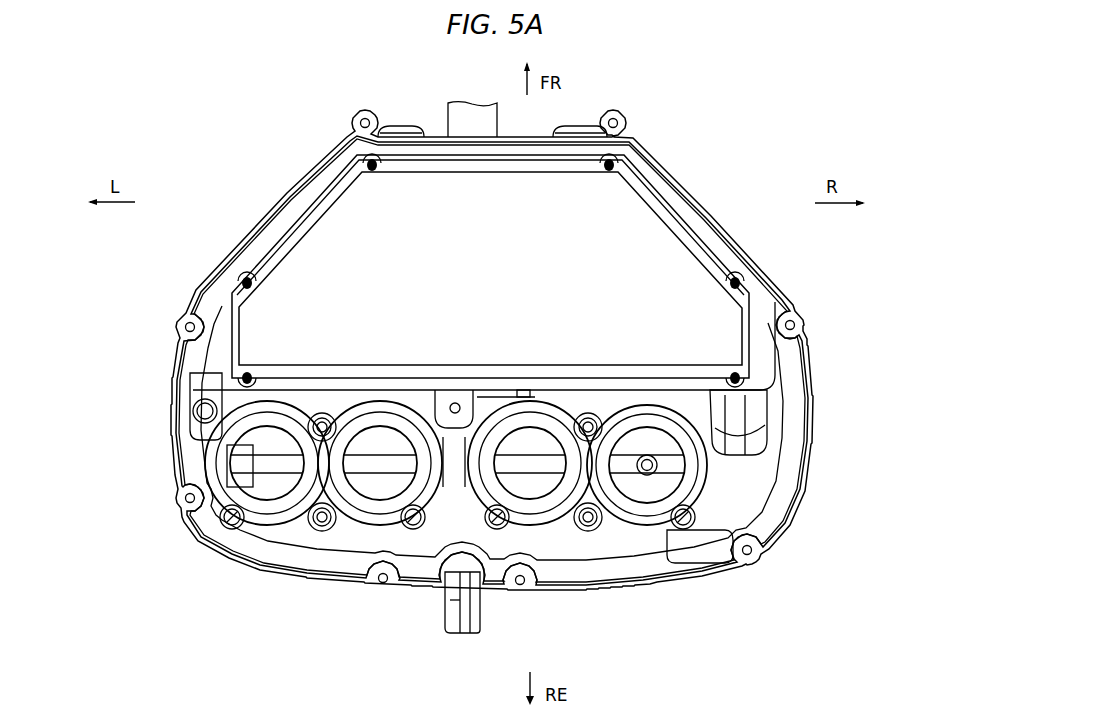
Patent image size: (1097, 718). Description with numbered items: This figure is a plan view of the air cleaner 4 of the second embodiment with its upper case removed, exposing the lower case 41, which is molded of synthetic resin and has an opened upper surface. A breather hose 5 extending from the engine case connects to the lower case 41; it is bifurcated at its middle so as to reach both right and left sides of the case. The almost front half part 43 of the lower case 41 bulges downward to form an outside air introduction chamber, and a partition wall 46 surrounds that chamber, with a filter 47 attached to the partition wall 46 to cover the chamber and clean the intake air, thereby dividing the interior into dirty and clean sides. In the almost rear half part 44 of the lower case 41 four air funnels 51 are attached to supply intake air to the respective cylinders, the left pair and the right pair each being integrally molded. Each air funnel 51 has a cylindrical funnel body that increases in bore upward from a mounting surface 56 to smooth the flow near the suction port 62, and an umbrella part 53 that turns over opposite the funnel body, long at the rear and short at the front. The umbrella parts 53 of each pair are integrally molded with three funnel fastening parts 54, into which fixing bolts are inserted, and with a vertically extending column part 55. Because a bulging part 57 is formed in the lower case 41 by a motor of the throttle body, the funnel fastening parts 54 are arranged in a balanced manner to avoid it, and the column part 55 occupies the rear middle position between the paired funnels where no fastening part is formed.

The air cleaner 4 is at (724, 153).
The breather hose 5 is at (482, 611).
The lower case 41 is at (770, 272).
The front half part 43 is at (522, 360).
The rear half part 44 is at (807, 491).
The partition wall 46 is at (762, 358).
The filter 47 is at (668, 263).
The air funnel 51 is at (286, 402).
The umbrella part 53 is at (260, 513).
The funnel fastening part 54 is at (323, 412).
The column part 55 is at (311, 530).
The mounting surface 56 is at (747, 517).
The bulging part 57 is at (476, 402).
The suction port 62 is at (257, 438).